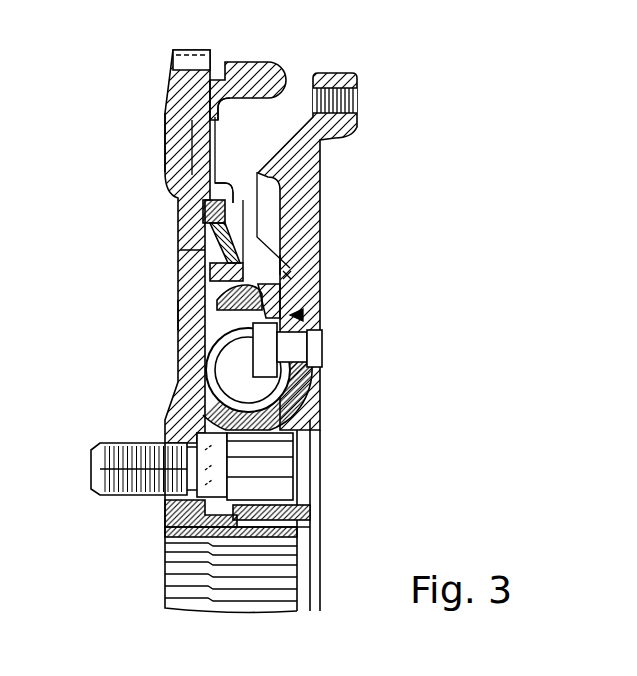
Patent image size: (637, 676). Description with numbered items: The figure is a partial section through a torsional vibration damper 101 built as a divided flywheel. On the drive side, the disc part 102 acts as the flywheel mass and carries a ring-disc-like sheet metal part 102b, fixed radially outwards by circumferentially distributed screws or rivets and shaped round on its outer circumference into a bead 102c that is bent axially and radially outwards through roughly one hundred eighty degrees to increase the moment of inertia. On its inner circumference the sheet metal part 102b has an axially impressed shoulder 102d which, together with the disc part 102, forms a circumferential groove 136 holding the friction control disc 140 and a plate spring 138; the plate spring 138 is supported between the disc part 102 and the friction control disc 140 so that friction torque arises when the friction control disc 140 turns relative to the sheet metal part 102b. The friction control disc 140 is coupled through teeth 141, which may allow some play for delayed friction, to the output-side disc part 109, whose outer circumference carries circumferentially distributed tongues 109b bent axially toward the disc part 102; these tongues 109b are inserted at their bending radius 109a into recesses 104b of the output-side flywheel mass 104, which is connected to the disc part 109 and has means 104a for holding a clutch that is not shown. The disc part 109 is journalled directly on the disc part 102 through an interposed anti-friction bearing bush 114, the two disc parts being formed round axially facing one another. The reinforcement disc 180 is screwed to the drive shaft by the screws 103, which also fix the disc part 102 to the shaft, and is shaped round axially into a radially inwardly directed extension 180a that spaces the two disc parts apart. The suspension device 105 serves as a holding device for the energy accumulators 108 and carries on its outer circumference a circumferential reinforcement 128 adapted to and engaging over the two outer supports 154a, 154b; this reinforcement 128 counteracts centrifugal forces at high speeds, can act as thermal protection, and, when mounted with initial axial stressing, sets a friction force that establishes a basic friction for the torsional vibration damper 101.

The torsional vibration damper 101 is at (445, 112).
The disc part 102 is at (182, 179).
The sheet metal part 102b is at (168, 149).
The bead 102c is at (292, 78).
The axially impressed shoulder 102d is at (231, 187).
The screws 103 is at (107, 463).
The flywheel mass 104 is at (303, 193).
The means for holding a clutch 104a is at (350, 75).
The recesses 104b is at (305, 310).
The suspension device 105 is at (303, 318).
The energy accumulators 108 is at (213, 403).
The disc part 109 is at (300, 410).
The bending radius 109a is at (300, 285).
The tongues 109b is at (298, 264).
The anti-friction bearing bush 114 is at (303, 528).
The circumferential reinforcement 128 is at (197, 293).
The circumferential groove 136 is at (202, 204).
The plate spring 138 is at (197, 221).
The friction control disc 140 is at (262, 210).
The teeth 141 is at (193, 287).
The outer support 154a is at (303, 315).
The outer support 154b is at (187, 317).
The reinforcement disc 180 is at (167, 520).
The radially inwardly directed extension 180a is at (207, 523).